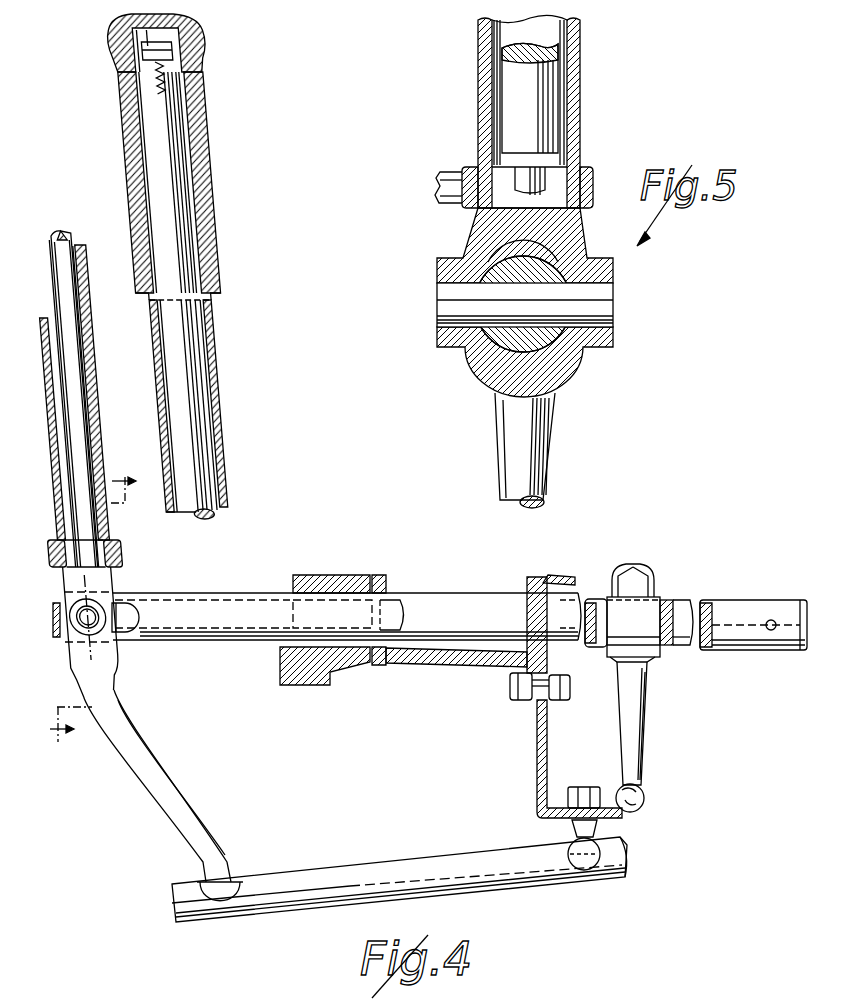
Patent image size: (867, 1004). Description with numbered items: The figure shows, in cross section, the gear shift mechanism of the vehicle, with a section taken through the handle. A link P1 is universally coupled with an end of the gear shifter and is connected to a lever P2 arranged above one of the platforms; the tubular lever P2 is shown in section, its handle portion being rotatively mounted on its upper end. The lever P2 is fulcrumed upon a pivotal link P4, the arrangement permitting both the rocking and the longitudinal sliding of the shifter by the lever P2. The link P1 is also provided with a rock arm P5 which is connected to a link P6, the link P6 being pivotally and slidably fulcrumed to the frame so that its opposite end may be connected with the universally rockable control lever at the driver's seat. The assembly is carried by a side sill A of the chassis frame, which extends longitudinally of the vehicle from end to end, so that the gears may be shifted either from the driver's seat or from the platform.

In FIG. 4, the link P1 is at (232, 599).
In FIG. 5, the link P1 is at (531, 343).
In FIG. 4, the lever P2 is at (212, 245).
In FIG. 5, the lever P2 is at (580, 88).
In FIG. 4, the pivotal link P4 is at (399, 870).
In FIG. 4, the rock arm P5 is at (642, 716).
In FIG. 4, the link P6 is at (645, 797).
In FIG. 4, the side sill A is at (537, 766).